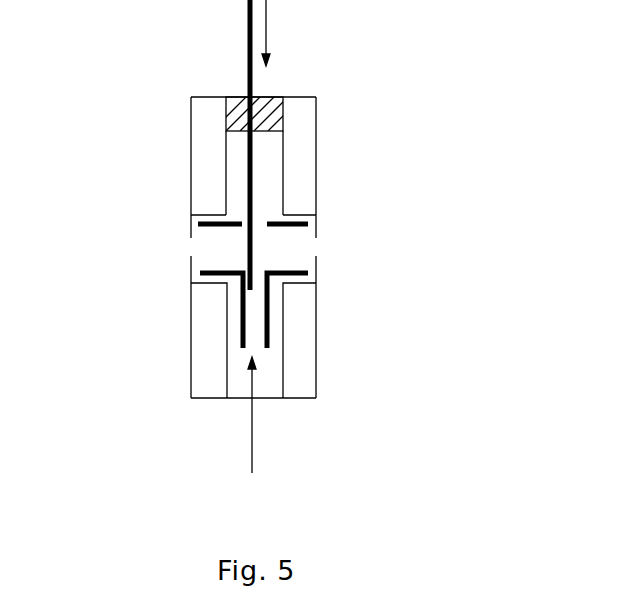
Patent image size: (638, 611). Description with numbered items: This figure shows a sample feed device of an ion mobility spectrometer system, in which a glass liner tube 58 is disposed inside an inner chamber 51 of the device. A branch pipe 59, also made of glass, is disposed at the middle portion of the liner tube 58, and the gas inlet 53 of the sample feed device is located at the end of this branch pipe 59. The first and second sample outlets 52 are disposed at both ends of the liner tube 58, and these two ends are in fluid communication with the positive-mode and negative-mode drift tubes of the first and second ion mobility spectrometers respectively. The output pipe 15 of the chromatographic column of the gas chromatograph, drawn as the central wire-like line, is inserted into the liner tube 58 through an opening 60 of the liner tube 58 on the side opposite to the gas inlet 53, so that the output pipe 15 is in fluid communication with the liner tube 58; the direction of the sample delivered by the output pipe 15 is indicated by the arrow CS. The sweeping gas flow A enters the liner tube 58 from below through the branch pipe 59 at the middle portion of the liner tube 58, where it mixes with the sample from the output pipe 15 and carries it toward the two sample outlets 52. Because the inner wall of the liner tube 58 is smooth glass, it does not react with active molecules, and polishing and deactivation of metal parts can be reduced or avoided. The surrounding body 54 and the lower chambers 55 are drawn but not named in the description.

The output pipe 15 is at (247, 68).
The inner chamber 51 is at (260, 216).
The first and second sample outlets 52 is at (202, 247).
The gas inlet 53 is at (259, 349).
The guide body 54 is at (267, 172).
The lower chamber 55 is at (274, 337).
The liner tube 58 is at (293, 273).
The branch pipe 59 is at (243, 333).
The opening 60 is at (243, 216).
The wire feed direction CS is at (283, 33).
The sweeping gas flow A is at (241, 430).